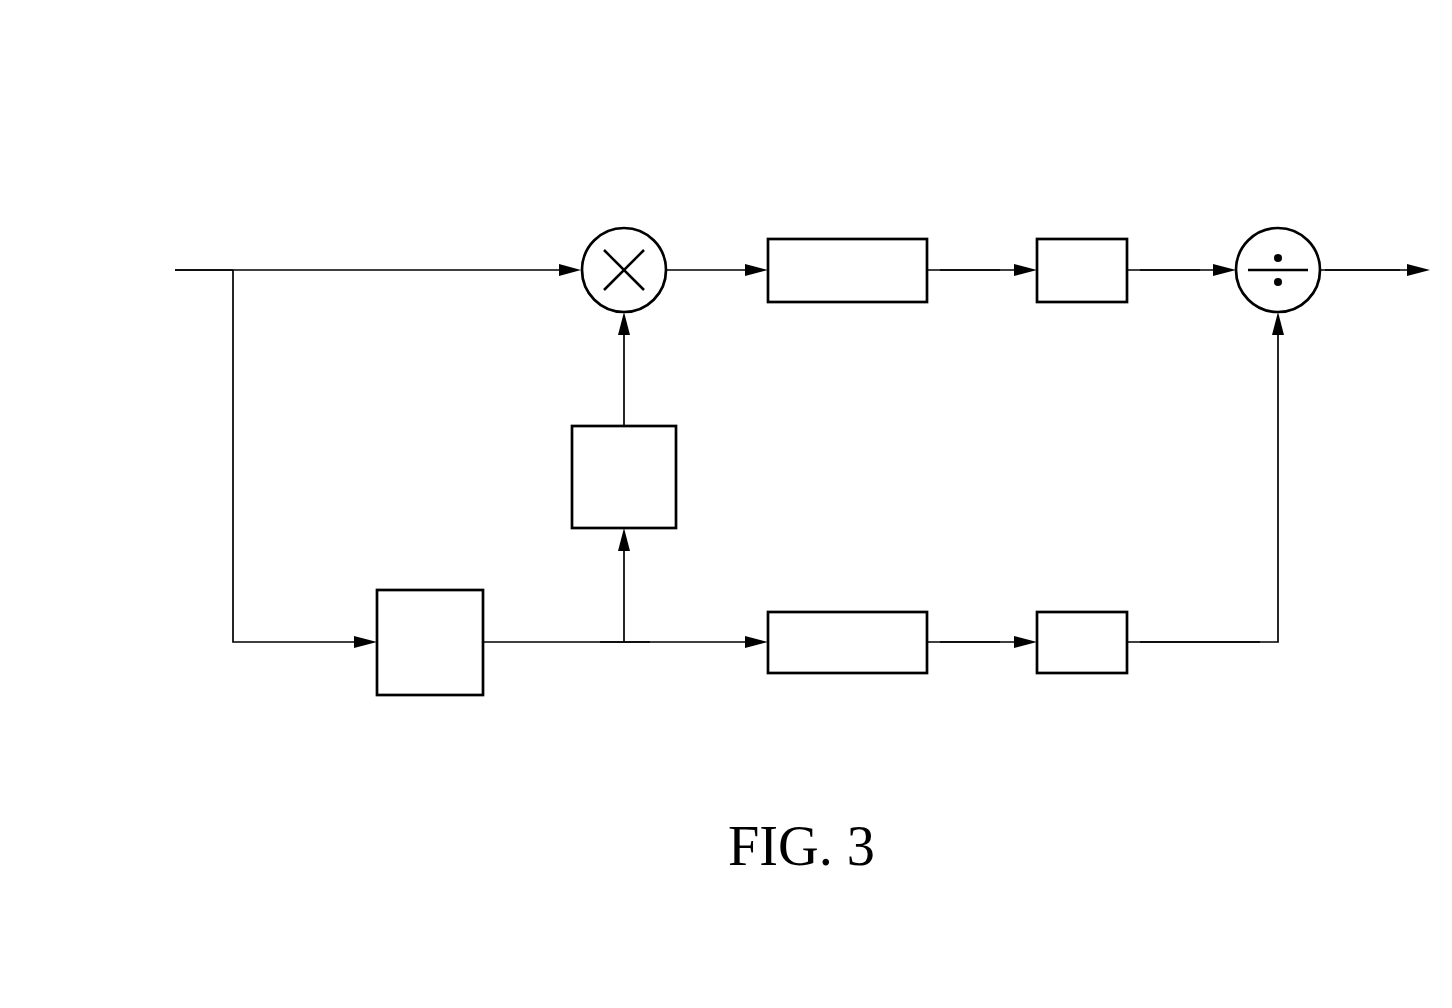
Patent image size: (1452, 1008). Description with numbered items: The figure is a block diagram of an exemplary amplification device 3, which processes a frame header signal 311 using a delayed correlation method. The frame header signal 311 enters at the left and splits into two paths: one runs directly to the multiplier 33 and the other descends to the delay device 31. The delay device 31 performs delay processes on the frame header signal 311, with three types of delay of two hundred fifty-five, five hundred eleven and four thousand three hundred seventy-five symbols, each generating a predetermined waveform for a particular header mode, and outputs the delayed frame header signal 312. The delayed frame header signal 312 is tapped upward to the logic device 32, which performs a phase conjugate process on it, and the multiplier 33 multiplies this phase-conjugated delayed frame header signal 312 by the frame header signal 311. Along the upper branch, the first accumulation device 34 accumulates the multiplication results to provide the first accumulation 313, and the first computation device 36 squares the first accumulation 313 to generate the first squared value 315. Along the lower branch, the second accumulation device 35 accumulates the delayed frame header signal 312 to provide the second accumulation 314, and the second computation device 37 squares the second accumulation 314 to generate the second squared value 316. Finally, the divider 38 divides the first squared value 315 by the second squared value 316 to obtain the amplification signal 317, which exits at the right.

The amplification device 3 is at (144, 82).
The delay device 31 is at (430, 590).
The logic device 32 is at (676, 476).
The multiplier 33 is at (623, 228).
The first accumulation device 34 is at (847, 239).
The second accumulation device 35 is at (847, 612).
The first computation device 36 is at (1082, 239).
The second computation device 37 is at (1083, 612).
The divider 38 is at (1278, 228).
The frame header signal 311 is at (209, 268).
The delayed frame header signal 312 is at (624, 597).
The first accumulation 313 is at (970, 268).
The second accumulation 314 is at (970, 640).
The first squared value 315 is at (1170, 268).
The second squared value 316 is at (1203, 640).
The amplification signal 317 is at (1365, 268).